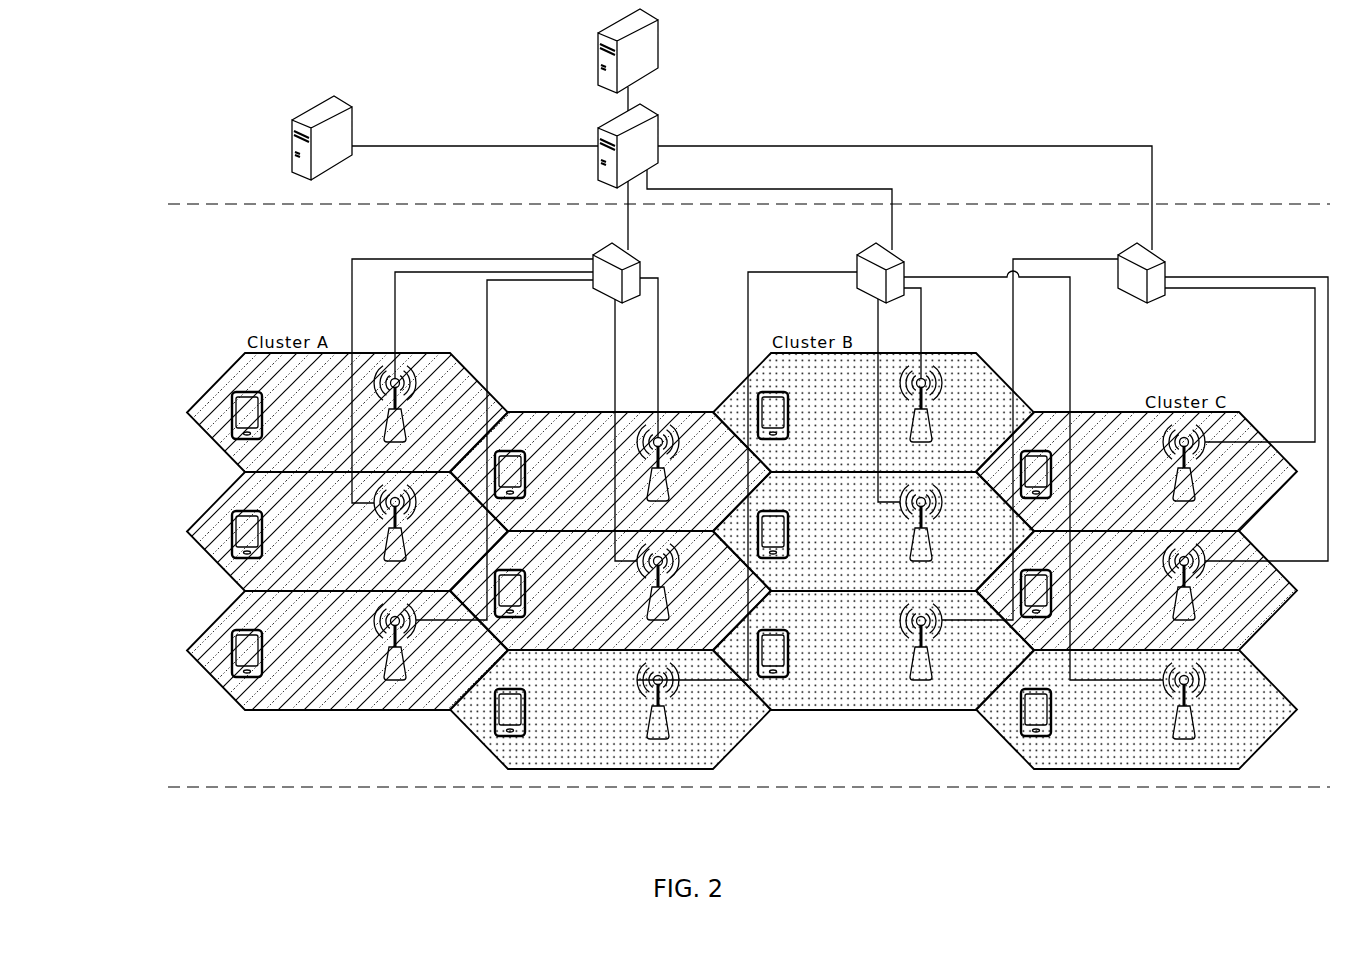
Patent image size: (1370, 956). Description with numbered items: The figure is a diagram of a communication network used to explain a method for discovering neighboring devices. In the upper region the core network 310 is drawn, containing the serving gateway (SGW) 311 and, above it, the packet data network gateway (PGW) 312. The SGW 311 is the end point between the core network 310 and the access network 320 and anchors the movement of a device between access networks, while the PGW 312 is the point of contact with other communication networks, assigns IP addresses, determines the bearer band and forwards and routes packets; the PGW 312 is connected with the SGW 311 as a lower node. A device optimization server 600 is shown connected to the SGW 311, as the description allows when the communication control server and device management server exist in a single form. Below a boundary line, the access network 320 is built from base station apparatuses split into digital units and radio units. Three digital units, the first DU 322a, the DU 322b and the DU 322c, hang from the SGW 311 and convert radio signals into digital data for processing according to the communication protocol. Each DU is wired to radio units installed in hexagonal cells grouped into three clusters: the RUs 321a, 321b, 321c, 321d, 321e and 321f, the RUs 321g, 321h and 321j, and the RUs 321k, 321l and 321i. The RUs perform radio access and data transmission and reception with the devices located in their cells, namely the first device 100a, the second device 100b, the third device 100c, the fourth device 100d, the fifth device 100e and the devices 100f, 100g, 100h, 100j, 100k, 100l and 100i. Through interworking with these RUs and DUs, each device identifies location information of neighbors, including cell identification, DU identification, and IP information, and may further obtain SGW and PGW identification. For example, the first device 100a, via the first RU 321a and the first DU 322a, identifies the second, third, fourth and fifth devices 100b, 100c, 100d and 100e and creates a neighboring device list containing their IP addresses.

The core network 310 is at (168, 88).
The access network 320 is at (168, 493).
The device optimization server 600 is at (292, 147).
The packet data network gateway (PGW) 312 is at (659, 42).
The serving gateway (SGW) 311 is at (659, 130).
The first digital unit (DU) 322a is at (641, 268).
The digital unit (DU) 322b is at (905, 268).
The digital unit (DU) 322c is at (1166, 268).
The first device 100a is at (263, 414).
The second device 100b is at (263, 533).
The third device 100c is at (263, 652).
The fourth device 100d is at (526, 473).
The fifth device 100e is at (526, 592).
The device 100f is at (526, 711).
The device 100g is at (789, 414).
The device 100h is at (789, 533).
The device 100i is at (1052, 711).
The terminal 100j is at (789, 652).
The terminal 100k is at (1052, 473).
The terminal 100l is at (1052, 592).
The first radio unit (RU) 321a is at (406, 422).
The radio unit (RU) 321b is at (406, 541).
The radio unit (RU) 321c is at (406, 660).
The radio unit (RU) 321d is at (669, 481).
The radio unit (RU) 321e is at (669, 600).
The radio unit (RU) 321f is at (669, 719).
The radio unit (RU) 321g is at (932, 422).
The radio unit (RU) 321h is at (932, 541).
The radio unit (RU) 321i is at (1195, 719).
The radio unit RU 321j is at (932, 660).
The radio unit RU 321k is at (1195, 481).
The radio unit RU 321l is at (1195, 600).